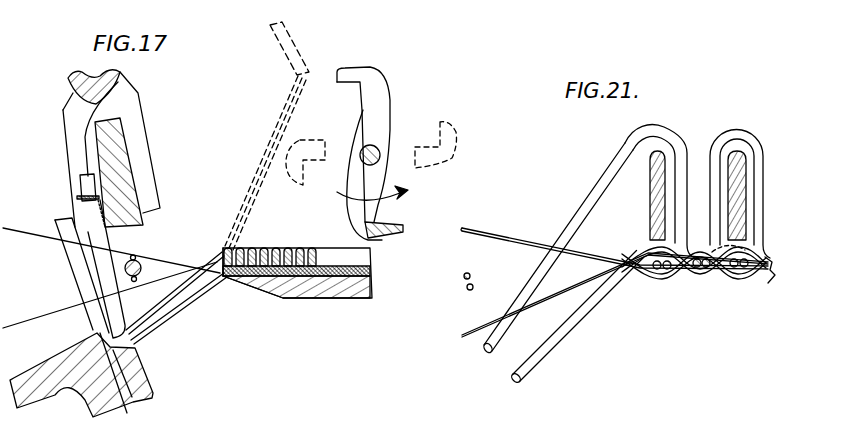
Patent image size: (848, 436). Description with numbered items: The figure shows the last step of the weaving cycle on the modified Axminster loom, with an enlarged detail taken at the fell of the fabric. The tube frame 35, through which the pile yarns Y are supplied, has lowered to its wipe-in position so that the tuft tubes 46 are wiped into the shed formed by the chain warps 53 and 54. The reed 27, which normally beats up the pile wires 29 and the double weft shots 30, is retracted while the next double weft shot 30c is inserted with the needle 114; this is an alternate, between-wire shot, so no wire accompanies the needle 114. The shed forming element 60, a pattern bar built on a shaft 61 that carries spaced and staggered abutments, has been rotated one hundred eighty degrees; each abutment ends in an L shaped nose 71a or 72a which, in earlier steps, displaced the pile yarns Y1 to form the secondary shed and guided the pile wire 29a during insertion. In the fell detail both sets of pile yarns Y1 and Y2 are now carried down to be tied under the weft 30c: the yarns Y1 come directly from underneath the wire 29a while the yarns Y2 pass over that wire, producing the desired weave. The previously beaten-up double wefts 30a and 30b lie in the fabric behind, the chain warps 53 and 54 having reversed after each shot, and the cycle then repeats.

In FIG. 17, the tube frame 35 is at (143, 143).
In FIG. 17, the needle 114 is at (127, 258).
In FIG. 17, the reed 27 is at (64, 256).
In FIG. 17, the tuft tubes 46 is at (117, 322).
In FIG. 17, the chain warp 54 is at (31, 233).
In FIG. 21, the chain warp 54 is at (481, 235).
In FIG. 17, the chain warp 53 is at (50, 314).
In FIG. 21, the chain warp 53 is at (465, 336).
In FIG. 17, the double weft shot 30c is at (88, 320).
In FIG. 21, the double weft shot 30c is at (464, 278).
In FIG. 17, the pile wire 29 is at (242, 247).
In FIG. 21, the pile wire 29 is at (737, 148).
In FIG. 17, the pile wire 29a is at (224, 247).
In FIG. 21, the pile wire 29a is at (662, 150).
In FIG. 17, the shed forming element 60 is at (383, 97).
In FIG. 17, the L shaped nose 72a is at (355, 73).
In FIG. 17, the shaft 61 is at (378, 152).
In FIG. 17, the L shaped nose 71a is at (403, 229).
In FIG. 21, the pile yarns Y1 is at (590, 310).
In FIG. 21, the pile yarns Y2 is at (572, 236).
In FIG. 21, the double weft shots 30 is at (744, 270).
In FIG. 21, the double weft 30a is at (706, 270).
In FIG. 21, the double weft 30b is at (665, 272).